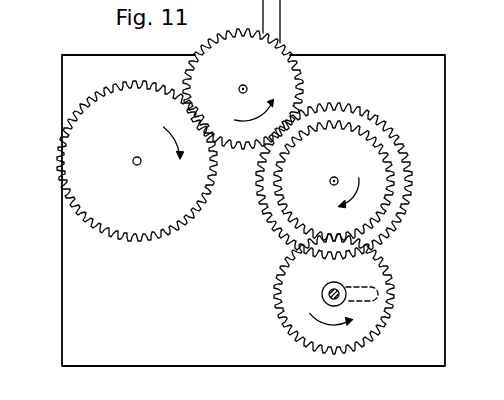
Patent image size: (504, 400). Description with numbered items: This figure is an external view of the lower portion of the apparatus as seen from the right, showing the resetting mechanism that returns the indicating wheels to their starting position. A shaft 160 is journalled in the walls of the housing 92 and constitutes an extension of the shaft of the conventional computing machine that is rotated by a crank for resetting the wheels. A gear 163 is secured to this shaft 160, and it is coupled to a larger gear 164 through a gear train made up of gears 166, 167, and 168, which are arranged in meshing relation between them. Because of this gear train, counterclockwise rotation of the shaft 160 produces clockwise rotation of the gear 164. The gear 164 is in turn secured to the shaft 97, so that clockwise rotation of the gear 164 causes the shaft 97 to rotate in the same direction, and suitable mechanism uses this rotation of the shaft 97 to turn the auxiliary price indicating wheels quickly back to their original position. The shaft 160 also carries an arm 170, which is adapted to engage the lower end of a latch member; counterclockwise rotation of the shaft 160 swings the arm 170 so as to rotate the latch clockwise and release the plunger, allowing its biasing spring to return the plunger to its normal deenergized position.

The housing 92 is at (148, 355).
The shaft 97 is at (132, 160).
The shaft 160 is at (327, 295).
The gear 163 is at (310, 284).
The gear 164 is at (137, 218).
The gear 166 is at (345, 147).
The gear 167 is at (389, 142).
The gear 168 is at (274, 62).
The arm 170 is at (372, 300).